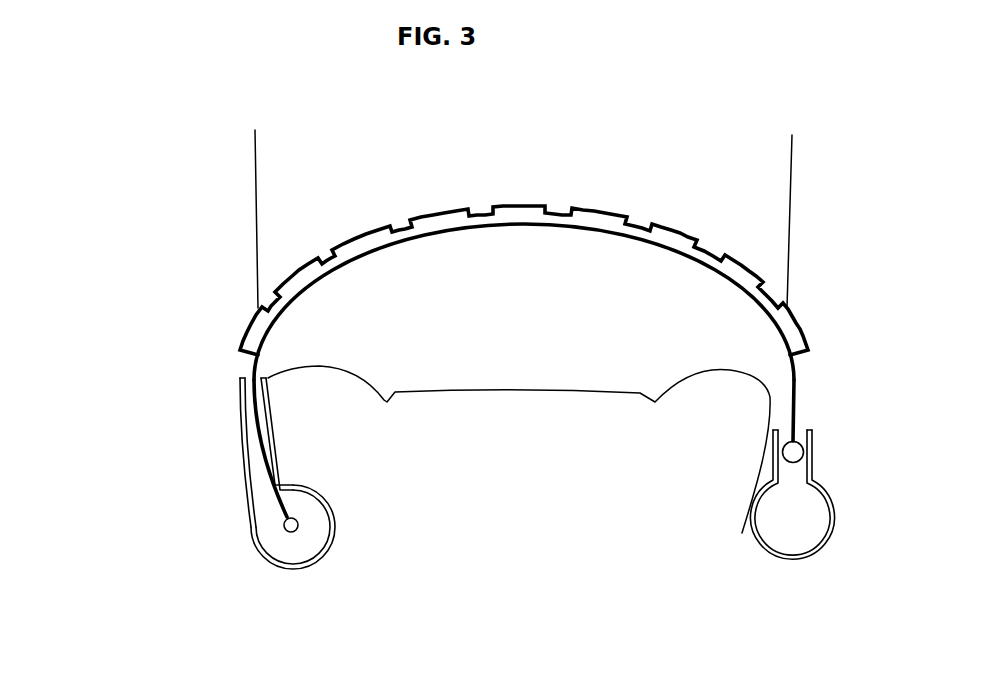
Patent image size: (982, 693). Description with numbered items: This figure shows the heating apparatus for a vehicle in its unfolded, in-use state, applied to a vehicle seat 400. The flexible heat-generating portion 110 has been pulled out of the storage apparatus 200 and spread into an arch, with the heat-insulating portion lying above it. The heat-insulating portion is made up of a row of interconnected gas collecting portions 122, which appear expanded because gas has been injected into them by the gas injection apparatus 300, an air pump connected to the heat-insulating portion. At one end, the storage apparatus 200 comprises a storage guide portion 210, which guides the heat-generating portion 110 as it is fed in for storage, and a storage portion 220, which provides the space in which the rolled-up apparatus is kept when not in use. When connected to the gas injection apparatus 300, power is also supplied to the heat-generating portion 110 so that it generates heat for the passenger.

The heat-generating portion 110 is at (588, 227).
The gas collecting portions 122 is at (510, 203).
The storage apparatus 200 is at (110, 453).
The storage guide portion 210 is at (245, 417).
The storage portion 220 is at (264, 540).
The gas injection apparatus 300 is at (793, 558).
The vehicle seat 400 is at (267, 193).